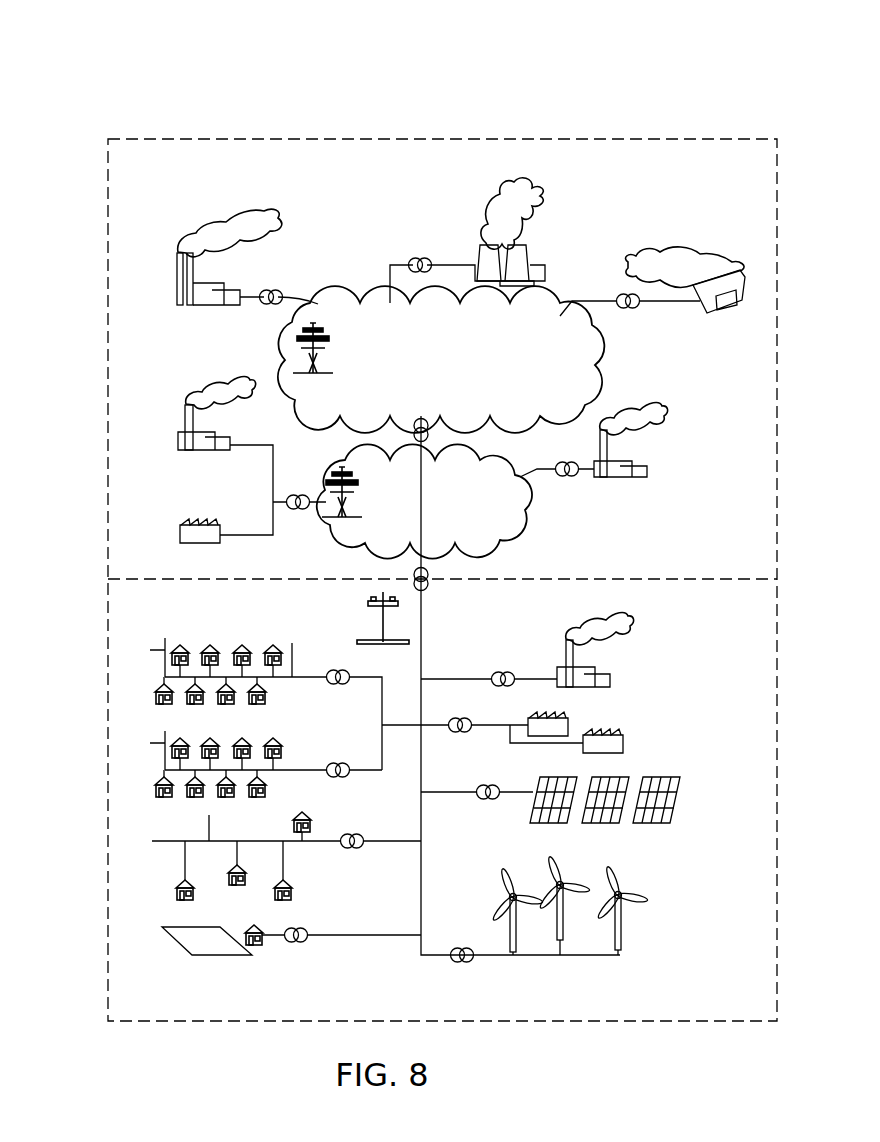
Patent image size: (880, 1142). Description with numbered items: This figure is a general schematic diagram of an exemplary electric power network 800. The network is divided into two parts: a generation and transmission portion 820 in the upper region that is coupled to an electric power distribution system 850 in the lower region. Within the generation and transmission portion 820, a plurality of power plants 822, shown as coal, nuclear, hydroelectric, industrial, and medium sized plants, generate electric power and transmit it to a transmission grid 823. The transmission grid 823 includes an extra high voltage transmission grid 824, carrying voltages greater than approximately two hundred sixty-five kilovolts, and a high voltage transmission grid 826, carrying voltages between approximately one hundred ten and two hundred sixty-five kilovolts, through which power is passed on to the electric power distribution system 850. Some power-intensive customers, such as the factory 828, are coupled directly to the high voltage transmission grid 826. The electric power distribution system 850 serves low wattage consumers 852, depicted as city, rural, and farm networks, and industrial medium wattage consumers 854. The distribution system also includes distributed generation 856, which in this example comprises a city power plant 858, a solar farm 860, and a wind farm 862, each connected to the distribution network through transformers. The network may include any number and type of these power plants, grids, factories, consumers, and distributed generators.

The electric power network 800 is at (185, 46).
The generation and transmission portion 820 is at (273, 131).
The power plants 822 is at (229, 214).
The transmission grid 823 is at (338, 472).
The extra high voltage transmission grid 824 is at (287, 404).
The high voltage transmission grid 826 is at (368, 540).
The factory 828 is at (180, 539).
The electric power distribution system 850 is at (127, 572).
The low wattage consumers 852 is at (198, 805).
The industrial medium wattage consumers 854 is at (538, 762).
The distributed generation 856 is at (588, 662).
The city power plant 858 is at (627, 628).
The solar farm 860 is at (531, 815).
The wind farm 862 is at (511, 925).